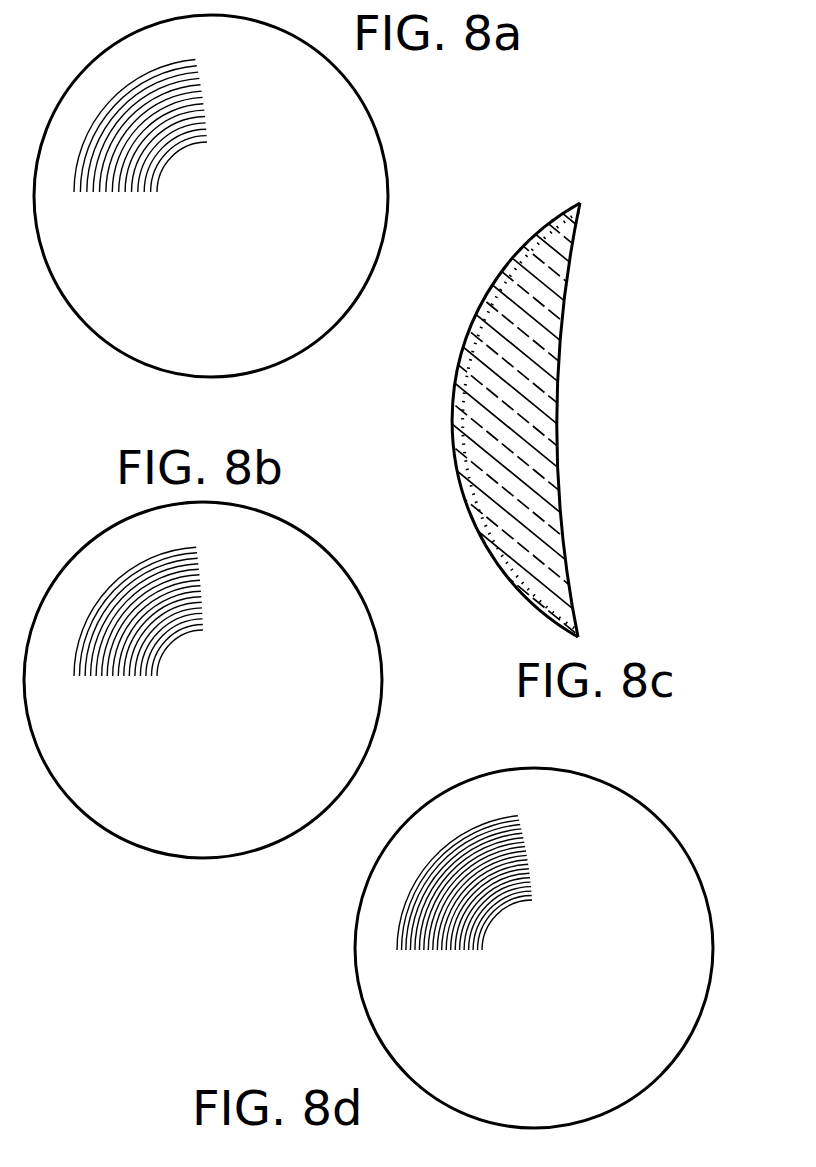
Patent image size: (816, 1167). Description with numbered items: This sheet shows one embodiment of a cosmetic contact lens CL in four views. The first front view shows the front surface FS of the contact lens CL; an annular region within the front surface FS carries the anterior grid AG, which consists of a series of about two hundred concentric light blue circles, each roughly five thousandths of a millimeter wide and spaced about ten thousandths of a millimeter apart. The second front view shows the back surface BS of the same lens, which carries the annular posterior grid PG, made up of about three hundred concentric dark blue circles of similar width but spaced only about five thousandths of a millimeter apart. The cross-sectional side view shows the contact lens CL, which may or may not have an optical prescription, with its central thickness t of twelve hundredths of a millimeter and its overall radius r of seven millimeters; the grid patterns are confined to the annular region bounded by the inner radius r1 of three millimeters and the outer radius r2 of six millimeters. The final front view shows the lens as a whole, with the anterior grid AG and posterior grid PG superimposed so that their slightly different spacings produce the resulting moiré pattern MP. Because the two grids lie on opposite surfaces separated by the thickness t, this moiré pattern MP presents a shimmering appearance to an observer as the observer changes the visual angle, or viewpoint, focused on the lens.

In FIG. 8A, the anterior grid AG is at (128, 101).
In FIG. 8C, the anterior grid AG is at (512, 262).
In FIG. 8A, the front surface FS is at (321, 131).
In FIG. 8B, the posterior grid PG is at (118, 588).
In FIG. 8C, the posterior grid PG is at (570, 300).
In FIG. 8B, the back surface BS is at (313, 610).
In FIG. 8C, the contact lens CL is at (520, 436).
In FIG. 8D, the moiré pattern MP is at (452, 840).
In FIG. 8C, the central thickness t is at (557, 421).
In FIG. 8C, the inner radius of annular grid region r1 is at (690, 421).
In FIG. 8C, the outer radius of annular grid region r2 is at (575, 600).
In FIG. 8C, the lens radius r is at (583, 637).